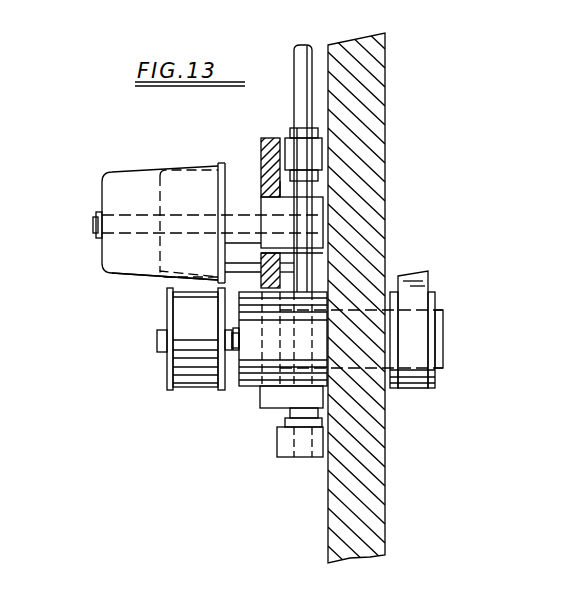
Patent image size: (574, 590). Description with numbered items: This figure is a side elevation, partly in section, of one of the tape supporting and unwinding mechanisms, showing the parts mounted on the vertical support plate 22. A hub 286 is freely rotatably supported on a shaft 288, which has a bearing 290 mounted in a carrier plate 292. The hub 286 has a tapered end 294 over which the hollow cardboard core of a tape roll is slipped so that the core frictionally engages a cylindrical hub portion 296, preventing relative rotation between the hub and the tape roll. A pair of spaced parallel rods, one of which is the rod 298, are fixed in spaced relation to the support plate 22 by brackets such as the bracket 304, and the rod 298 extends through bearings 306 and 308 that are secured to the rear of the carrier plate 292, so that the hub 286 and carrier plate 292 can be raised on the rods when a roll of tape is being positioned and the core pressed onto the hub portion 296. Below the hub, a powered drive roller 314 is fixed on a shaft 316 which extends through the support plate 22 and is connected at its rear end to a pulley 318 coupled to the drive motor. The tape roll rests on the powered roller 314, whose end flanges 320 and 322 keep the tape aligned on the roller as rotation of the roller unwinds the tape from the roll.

The support plate 22 is at (376, 132).
The hub 286 is at (146, 164).
The shaft 288 is at (93, 225).
The bearing 290 is at (272, 205).
The carrier plate 292 is at (260, 148).
The tapered end 294 is at (124, 281).
The cylindrical hub portion 296 is at (198, 168).
The rod 298 is at (301, 57).
The bracket 304 is at (280, 447).
The bearing 306 is at (286, 128).
The bearing 308 is at (293, 412).
The powered drive roller 314 is at (197, 388).
The shaft 316 is at (157, 343).
The pulley 318 is at (436, 298).
The end flange 320 is at (172, 388).
The end flange 322 is at (240, 388).